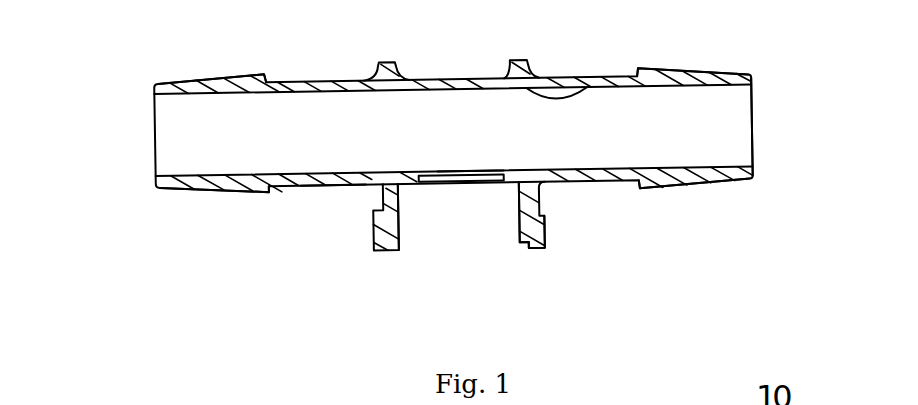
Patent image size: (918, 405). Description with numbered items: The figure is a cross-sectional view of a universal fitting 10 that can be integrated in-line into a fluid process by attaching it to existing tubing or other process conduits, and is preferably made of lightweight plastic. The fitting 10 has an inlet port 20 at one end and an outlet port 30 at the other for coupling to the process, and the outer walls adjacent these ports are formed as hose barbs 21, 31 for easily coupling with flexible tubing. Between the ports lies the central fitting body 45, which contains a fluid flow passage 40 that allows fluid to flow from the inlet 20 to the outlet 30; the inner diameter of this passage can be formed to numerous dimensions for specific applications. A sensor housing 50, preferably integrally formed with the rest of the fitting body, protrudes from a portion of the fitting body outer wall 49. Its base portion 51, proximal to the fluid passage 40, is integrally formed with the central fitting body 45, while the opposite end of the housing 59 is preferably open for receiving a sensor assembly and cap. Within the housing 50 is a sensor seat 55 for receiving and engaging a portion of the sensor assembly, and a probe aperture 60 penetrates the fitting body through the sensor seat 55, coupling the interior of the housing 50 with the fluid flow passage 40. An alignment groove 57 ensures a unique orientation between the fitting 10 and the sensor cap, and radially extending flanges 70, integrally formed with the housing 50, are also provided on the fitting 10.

The fitting 10 is at (238, 242).
The inlet port 20 is at (152, 148).
The hose barb 21 is at (223, 77).
The outlet port 30 is at (753, 135).
The hose barb 31 is at (690, 68).
The fluid flow passage 40 is at (585, 95).
The central fitting body 45 is at (342, 187).
The fitting body outer wall 49 is at (405, 190).
The sensor housing 50 is at (545, 223).
The base portion 51 is at (380, 193).
The sensor seat 55 is at (483, 190).
The alignment groove 57 is at (522, 250).
The open end of housing 59 is at (545, 240).
The probe aperture 60 is at (437, 167).
The radially extending flange 70 is at (390, 61).